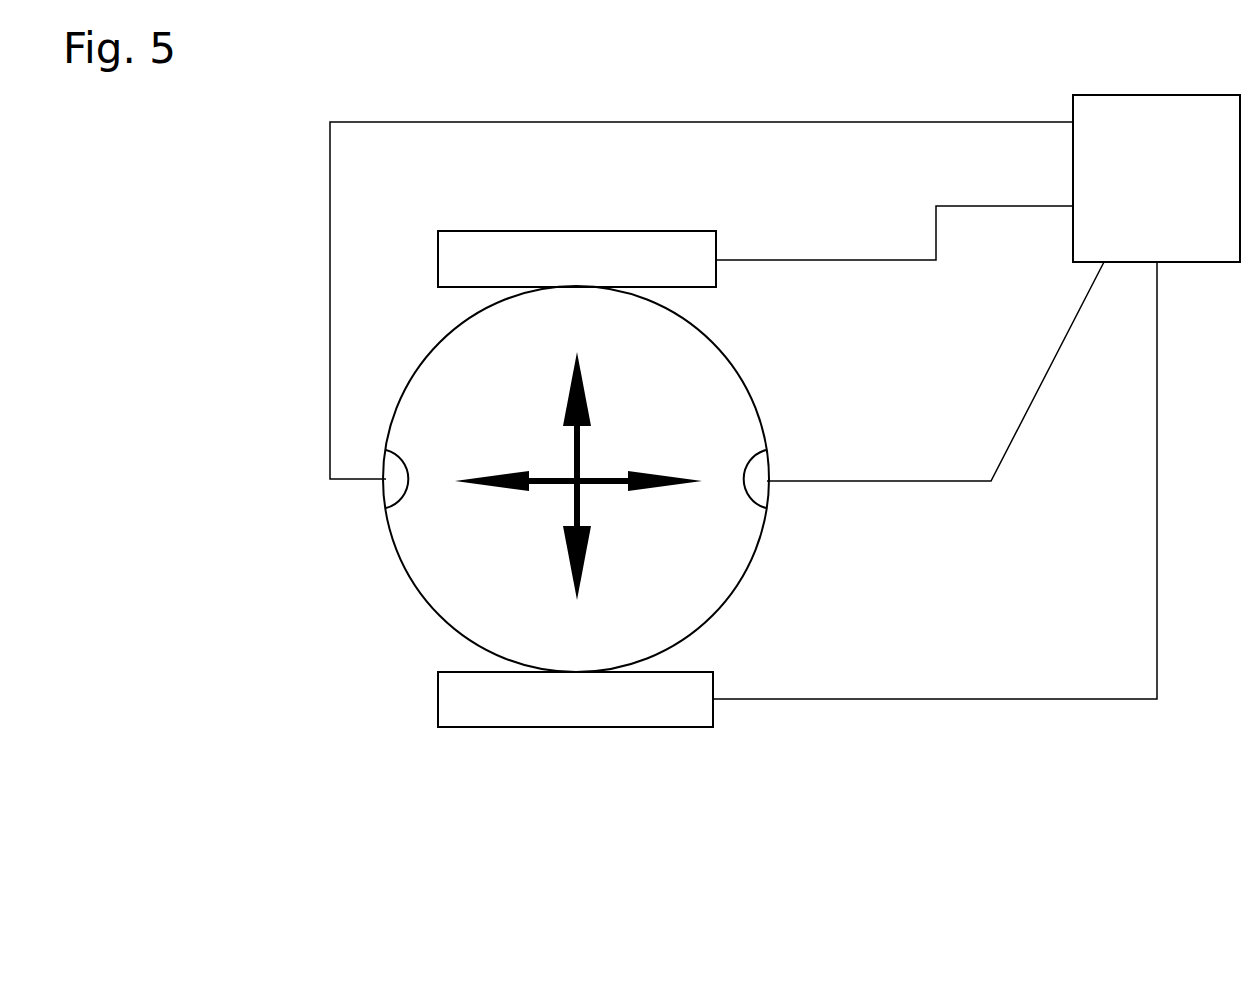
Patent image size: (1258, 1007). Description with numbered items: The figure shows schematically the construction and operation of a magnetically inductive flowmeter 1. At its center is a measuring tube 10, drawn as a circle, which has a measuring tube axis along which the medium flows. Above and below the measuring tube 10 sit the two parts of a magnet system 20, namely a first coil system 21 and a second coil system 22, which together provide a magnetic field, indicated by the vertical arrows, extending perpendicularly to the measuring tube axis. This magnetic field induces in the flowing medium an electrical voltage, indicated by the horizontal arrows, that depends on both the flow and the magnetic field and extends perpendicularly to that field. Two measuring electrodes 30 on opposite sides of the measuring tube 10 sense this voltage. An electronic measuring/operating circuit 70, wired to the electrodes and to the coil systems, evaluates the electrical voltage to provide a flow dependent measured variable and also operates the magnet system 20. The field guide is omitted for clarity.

The magnetically inductive flowmeter 1 is at (302, 670).
The measuring tube 10 is at (717, 342).
The magnet system 20 is at (438, 753).
The first coil system 21 is at (495, 258).
The second coil system 22 is at (685, 700).
The measuring electrodes 30 is at (395, 480).
The electronic measuring/operating circuit 70 is at (1156, 178).